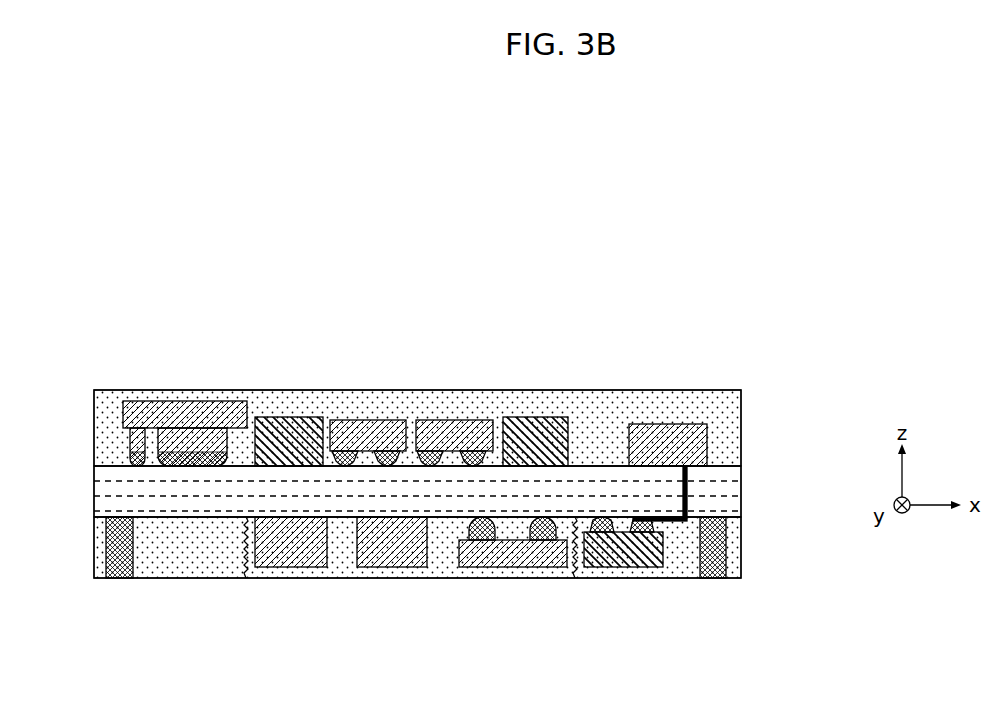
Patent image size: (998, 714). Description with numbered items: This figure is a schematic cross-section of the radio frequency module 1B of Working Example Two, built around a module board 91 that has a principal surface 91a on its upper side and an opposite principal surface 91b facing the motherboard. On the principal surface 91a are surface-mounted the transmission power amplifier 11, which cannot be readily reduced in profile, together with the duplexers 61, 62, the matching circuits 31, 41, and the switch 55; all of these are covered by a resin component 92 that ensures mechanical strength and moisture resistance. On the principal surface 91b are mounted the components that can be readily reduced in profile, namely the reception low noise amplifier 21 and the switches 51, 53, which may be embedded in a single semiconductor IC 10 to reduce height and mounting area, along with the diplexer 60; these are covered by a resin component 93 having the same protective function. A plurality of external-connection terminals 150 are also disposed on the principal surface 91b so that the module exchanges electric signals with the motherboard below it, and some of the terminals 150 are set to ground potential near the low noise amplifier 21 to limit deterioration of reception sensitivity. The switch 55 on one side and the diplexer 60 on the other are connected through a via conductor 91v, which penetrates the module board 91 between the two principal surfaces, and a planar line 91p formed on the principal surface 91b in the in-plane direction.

The radio frequency module 1B is at (780, 364).
The semiconductor IC 10 is at (445, 577).
The transmission power amplifier 11 is at (192, 408).
The reception low noise amplifier 21 is at (542, 565).
The matching circuit 31 is at (297, 420).
The matching circuit 41 is at (542, 424).
The switch 51 is at (293, 560).
The switch 53 is at (390, 558).
The switch 55 is at (658, 432).
The diplexer 60 is at (617, 565).
The duplexer 61 is at (382, 424).
The duplexer 62 is at (468, 424).
The module board 91 is at (741, 506).
The principal surface 91a is at (743, 463).
The principal surface 91b is at (736, 526).
The via conductor 91v is at (688, 492).
The planar line 91p is at (674, 522).
The resin component 92 is at (742, 410).
The resin component 93 is at (736, 566).
The external-connection terminal 150 is at (118, 577).